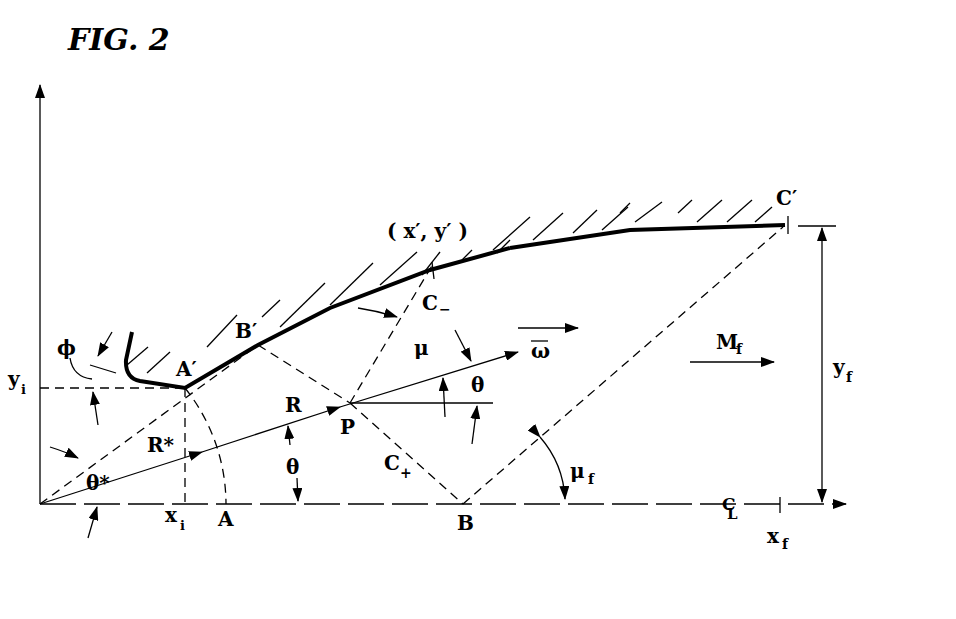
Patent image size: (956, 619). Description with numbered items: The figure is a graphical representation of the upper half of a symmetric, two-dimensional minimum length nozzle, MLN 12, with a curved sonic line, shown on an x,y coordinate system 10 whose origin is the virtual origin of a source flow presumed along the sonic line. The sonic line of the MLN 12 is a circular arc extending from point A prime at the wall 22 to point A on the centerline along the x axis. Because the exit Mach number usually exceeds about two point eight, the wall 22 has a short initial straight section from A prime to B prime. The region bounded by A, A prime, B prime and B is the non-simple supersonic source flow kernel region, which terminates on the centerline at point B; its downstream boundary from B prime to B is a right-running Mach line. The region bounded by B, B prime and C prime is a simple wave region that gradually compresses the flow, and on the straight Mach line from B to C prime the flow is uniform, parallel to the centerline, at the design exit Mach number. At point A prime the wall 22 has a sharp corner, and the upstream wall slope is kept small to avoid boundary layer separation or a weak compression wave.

The coordinate system (axes) 10 is at (446, 291).
The MLN 12 is at (331, 268).
The wall 22 is at (673, 223).